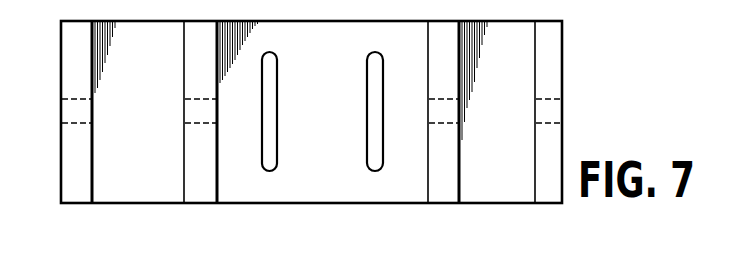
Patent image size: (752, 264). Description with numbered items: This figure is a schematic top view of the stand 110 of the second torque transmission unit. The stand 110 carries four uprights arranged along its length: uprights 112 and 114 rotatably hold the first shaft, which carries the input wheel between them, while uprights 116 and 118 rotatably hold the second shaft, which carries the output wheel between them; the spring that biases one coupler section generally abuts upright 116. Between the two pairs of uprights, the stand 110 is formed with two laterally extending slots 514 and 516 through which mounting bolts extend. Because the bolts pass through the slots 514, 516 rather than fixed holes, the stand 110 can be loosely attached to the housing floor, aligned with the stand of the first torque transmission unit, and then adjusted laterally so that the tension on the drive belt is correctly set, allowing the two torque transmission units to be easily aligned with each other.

The stand 110 is at (282, 112).
The upright 112 is at (61, 57).
The upright 114 is at (184, 80).
The upright 116 is at (427, 56).
The upright 118 is at (535, 79).
The slot 514 is at (277, 107).
The slot 516 is at (367, 136).